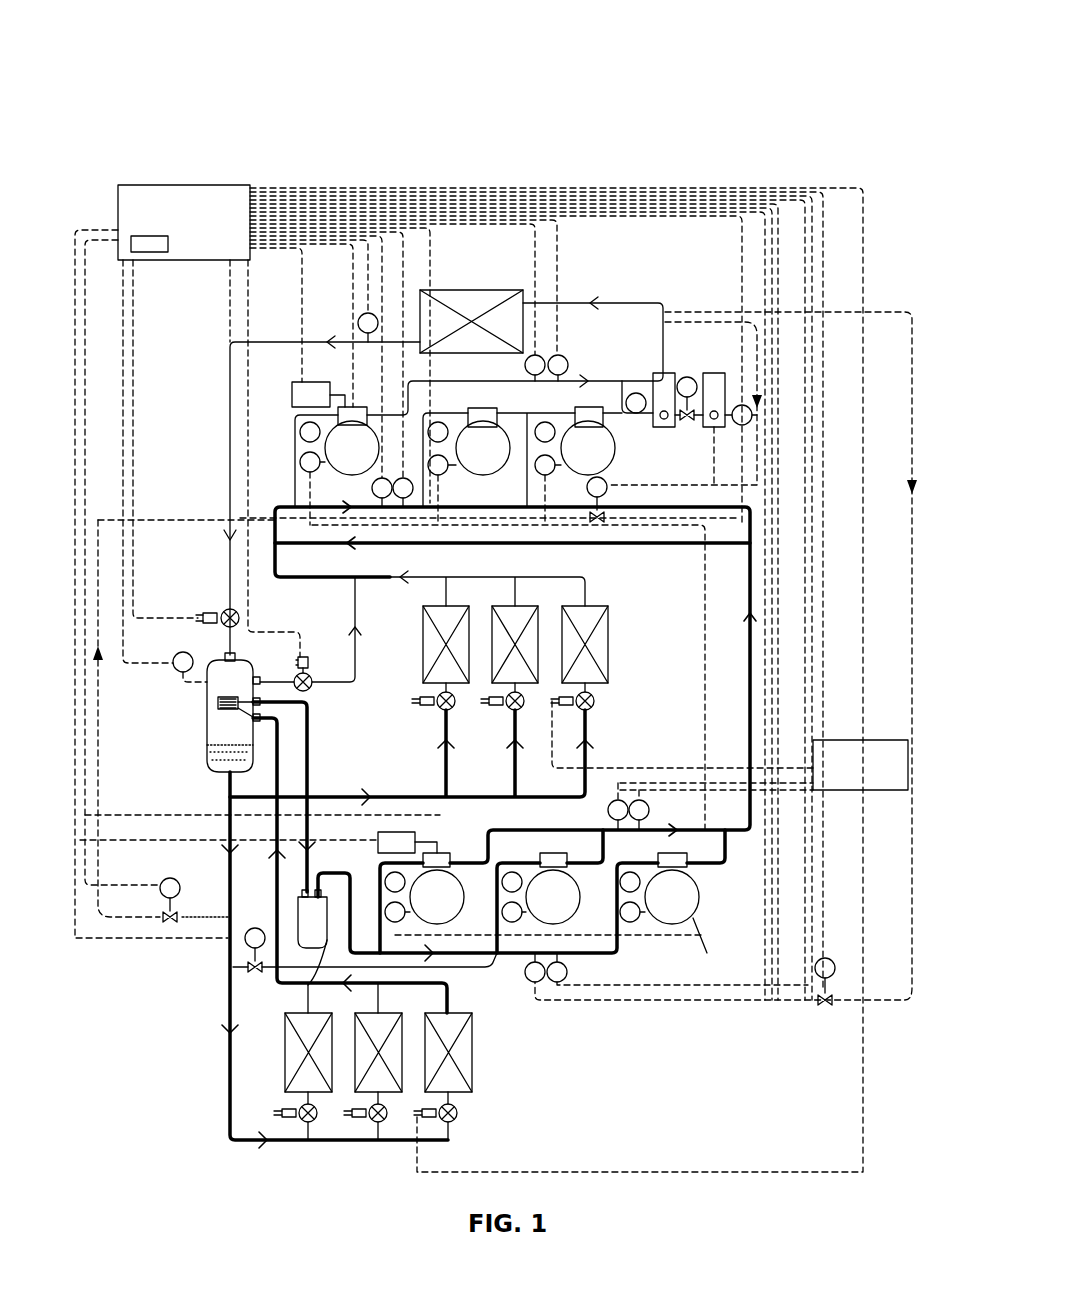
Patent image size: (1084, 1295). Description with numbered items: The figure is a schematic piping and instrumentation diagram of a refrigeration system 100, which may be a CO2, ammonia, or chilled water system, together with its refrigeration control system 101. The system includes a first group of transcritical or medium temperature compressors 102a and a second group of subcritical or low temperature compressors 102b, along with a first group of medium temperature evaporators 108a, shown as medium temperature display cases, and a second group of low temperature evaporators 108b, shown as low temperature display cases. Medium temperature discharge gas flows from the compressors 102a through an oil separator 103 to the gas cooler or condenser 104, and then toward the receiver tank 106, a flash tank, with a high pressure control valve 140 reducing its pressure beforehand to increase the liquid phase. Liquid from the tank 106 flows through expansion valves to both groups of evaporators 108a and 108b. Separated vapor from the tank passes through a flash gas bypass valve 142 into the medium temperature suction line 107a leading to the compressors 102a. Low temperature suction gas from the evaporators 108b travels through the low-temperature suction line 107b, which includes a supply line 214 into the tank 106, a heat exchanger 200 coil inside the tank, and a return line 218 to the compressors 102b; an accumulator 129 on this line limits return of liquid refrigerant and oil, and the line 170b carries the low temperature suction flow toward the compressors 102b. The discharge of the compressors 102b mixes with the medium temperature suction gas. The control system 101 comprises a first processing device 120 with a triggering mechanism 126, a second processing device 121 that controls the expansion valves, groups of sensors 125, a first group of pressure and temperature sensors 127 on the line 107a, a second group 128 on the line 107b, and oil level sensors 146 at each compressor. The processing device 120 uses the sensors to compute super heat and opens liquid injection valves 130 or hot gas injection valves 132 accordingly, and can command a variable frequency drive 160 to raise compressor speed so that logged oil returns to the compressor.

The refrigeration system 100 is at (128, 54).
The refrigeration control system 101 is at (160, 102).
The first compressor or group of compressors 102a is at (572, 385).
The second compressor or group of compressors 102b is at (680, 846).
The oil separator 103 is at (712, 360).
The gas cooler or condenser 104 is at (482, 354).
The receiver tank 106 is at (243, 660).
The medium temperature suction line 107a is at (455, 577).
The low-temperature suction line 107b is at (305, 1002).
The first evaporator or group of evaporators 108a is at (602, 590).
The second evaporator or group of evaporators 108b is at (438, 992).
The first processing device 120 is at (184, 198).
The second processing device 121 is at (883, 776).
The group of sensors 125 is at (630, 790).
The triggering mechanism 126 is at (158, 236).
The first group of pressure and temperature sensors 127 is at (424, 500).
The second group of pressure and temperature sensors 128 is at (552, 1000).
The accumulator 129 is at (298, 925).
The liquid injection valve 130 is at (162, 880).
The hot gas injection valve 132 is at (607, 485).
The high pressure control valve 140 is at (222, 610).
The pressure control or regulating valve 142 is at (310, 688).
The oil level sensors 146 is at (537, 432).
The variable frequency drive 160 is at (292, 394).
The low temperature suction line 170b is at (305, 986).
The heat exchanger 200 is at (249, 670).
The supply line 214 is at (228, 790).
The return line 218 is at (310, 770).